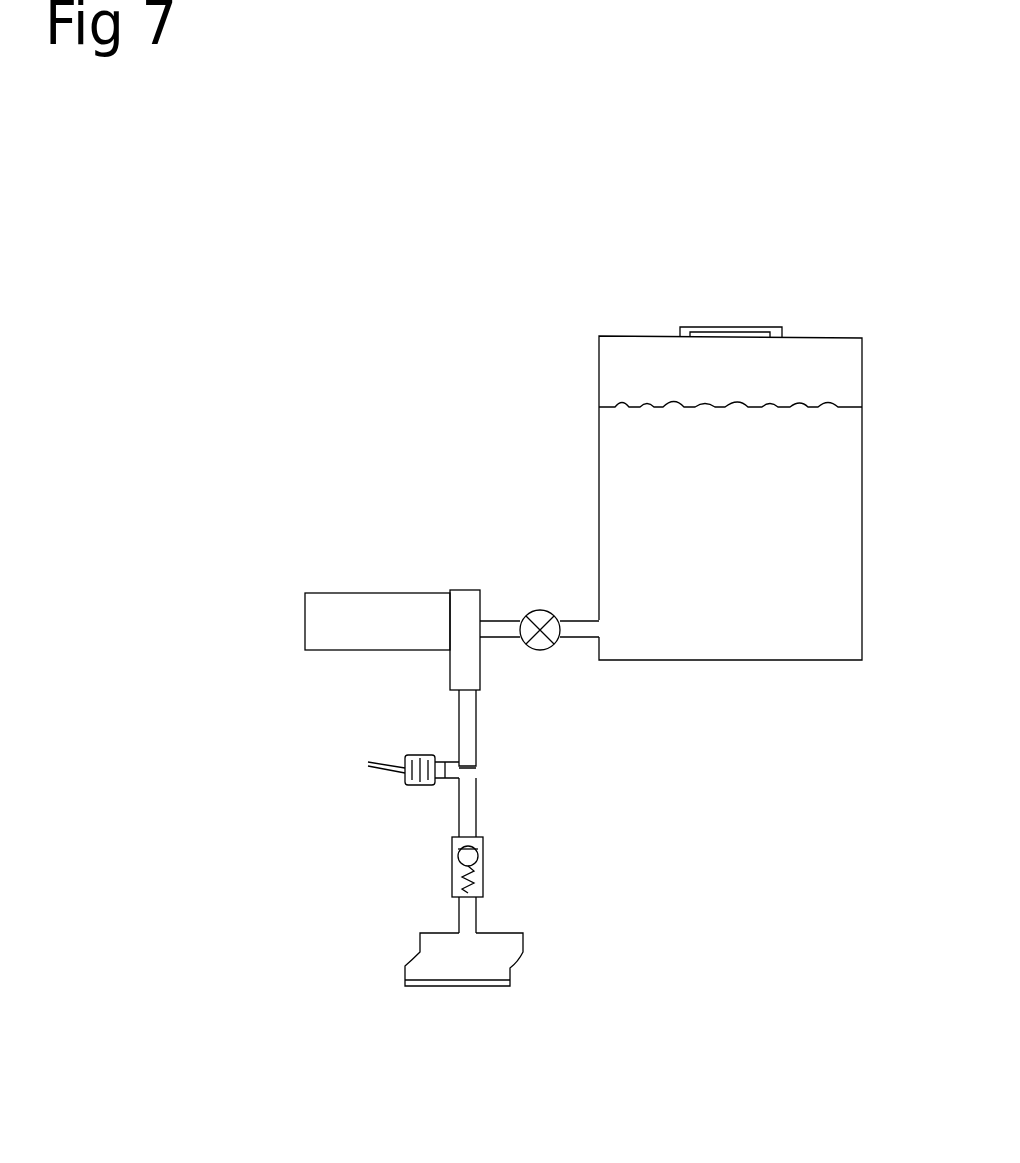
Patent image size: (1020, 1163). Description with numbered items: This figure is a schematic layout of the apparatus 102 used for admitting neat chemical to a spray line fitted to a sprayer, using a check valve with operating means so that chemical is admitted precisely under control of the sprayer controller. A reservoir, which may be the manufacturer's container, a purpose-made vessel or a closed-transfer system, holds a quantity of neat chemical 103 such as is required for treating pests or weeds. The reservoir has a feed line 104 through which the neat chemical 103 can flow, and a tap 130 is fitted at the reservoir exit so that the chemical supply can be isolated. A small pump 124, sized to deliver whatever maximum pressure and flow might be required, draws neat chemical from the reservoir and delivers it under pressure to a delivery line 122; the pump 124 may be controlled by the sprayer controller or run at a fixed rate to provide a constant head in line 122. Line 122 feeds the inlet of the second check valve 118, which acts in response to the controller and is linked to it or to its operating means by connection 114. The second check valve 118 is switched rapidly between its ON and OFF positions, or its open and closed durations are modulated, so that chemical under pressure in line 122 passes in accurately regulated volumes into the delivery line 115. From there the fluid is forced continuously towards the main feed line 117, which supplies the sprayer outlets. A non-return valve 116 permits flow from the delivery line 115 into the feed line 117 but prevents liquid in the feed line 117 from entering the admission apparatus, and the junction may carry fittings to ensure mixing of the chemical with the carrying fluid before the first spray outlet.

The apparatus 102 is at (450, 388).
The neat chemical 103 is at (803, 430).
The feed line 104 is at (575, 632).
The tap 130 is at (545, 658).
The pump 124 is at (347, 608).
The delivery line 122 is at (449, 720).
The connection 114 is at (363, 755).
The second check valve 118 is at (397, 797).
The delivery line 115 is at (458, 810).
The non-return valve 116 is at (443, 887).
The main feed line 117 is at (510, 960).